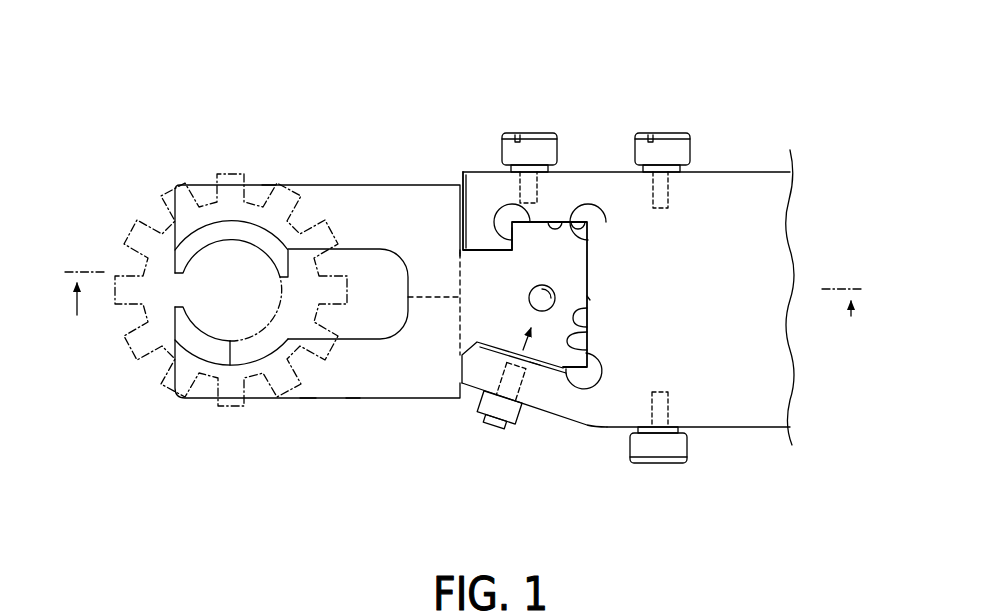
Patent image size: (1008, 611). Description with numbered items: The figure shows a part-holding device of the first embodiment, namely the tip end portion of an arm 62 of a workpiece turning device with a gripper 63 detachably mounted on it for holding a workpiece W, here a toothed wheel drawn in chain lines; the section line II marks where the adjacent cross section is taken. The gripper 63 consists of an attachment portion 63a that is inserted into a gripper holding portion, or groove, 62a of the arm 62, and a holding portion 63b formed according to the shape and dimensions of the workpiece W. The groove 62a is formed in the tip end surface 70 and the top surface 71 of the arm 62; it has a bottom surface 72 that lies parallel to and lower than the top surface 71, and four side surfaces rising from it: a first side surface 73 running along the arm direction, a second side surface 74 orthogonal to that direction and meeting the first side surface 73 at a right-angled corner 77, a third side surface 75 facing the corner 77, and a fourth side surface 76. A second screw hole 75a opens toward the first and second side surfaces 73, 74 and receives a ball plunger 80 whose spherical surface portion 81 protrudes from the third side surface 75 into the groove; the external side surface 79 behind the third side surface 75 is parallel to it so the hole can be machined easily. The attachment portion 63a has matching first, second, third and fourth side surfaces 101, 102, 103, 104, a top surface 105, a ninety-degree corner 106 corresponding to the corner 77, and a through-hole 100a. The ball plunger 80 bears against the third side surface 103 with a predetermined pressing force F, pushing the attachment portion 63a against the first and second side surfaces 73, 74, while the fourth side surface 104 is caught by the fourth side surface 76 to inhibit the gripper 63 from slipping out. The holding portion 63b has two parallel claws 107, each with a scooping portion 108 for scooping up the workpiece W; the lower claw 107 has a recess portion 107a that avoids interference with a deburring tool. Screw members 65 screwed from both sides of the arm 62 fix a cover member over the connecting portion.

The arm 62 is at (626, 289).
The gripper holding portion (groove) 62a is at (587, 347).
The gripper 63 is at (312, 255).
The attachment portion 63a is at (458, 255).
The holding portion 63b is at (320, 177).
The screw member 65 is at (537, 133).
The tip end surface 70 is at (460, 170).
The top surface 71 is at (748, 207).
The bottom surface (third surface) 72 is at (556, 290).
The first side surface (first surface) 73 is at (556, 222).
The second side surface (second surface) 74 is at (587, 319).
The third side surface 75 is at (557, 357).
The second screw hole 75a is at (512, 423).
The fourth side surface 76 is at (511, 204).
The corner 77 is at (588, 205).
The external side surface 79 is at (583, 428).
The ball plunger (pressing means) 80 is at (472, 443).
The spherical surface portion 81 is at (483, 398).
The through-hole 100a is at (554, 289).
The first side surface 101 is at (540, 222).
The second side surface 102 is at (588, 298).
The third side surface 103 is at (535, 362).
The fourth side surface 104 is at (492, 226).
The top surface 105 is at (478, 286).
The corner 106 is at (597, 226).
The claw 107 is at (268, 185).
The recess portion 107a is at (353, 377).
The scooping portion 108 is at (213, 233).
The workpiece W is at (130, 232).
The pressing force F is at (457, 393).
The section line II is at (460, 305).